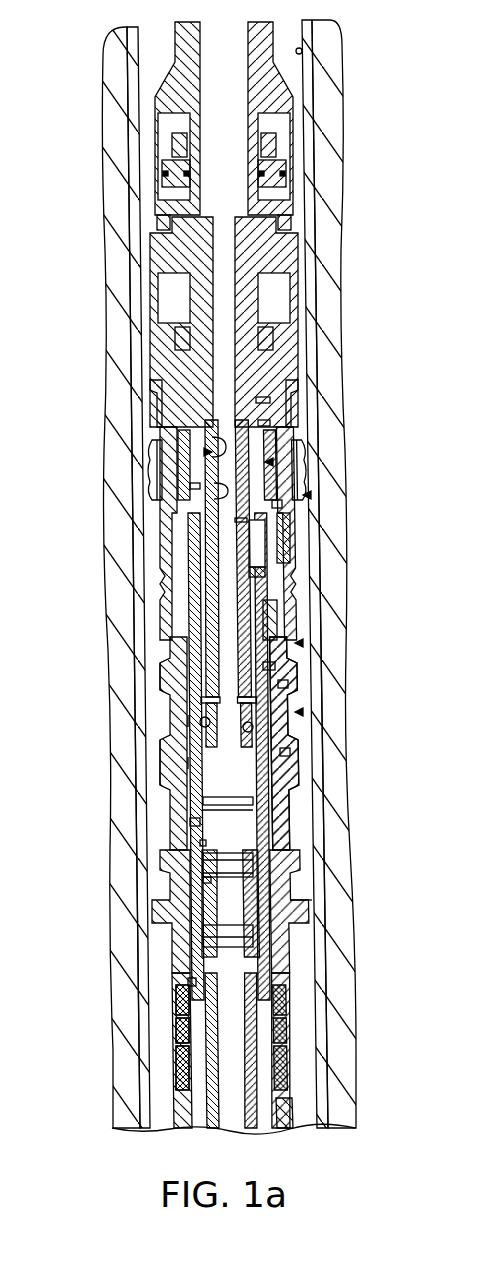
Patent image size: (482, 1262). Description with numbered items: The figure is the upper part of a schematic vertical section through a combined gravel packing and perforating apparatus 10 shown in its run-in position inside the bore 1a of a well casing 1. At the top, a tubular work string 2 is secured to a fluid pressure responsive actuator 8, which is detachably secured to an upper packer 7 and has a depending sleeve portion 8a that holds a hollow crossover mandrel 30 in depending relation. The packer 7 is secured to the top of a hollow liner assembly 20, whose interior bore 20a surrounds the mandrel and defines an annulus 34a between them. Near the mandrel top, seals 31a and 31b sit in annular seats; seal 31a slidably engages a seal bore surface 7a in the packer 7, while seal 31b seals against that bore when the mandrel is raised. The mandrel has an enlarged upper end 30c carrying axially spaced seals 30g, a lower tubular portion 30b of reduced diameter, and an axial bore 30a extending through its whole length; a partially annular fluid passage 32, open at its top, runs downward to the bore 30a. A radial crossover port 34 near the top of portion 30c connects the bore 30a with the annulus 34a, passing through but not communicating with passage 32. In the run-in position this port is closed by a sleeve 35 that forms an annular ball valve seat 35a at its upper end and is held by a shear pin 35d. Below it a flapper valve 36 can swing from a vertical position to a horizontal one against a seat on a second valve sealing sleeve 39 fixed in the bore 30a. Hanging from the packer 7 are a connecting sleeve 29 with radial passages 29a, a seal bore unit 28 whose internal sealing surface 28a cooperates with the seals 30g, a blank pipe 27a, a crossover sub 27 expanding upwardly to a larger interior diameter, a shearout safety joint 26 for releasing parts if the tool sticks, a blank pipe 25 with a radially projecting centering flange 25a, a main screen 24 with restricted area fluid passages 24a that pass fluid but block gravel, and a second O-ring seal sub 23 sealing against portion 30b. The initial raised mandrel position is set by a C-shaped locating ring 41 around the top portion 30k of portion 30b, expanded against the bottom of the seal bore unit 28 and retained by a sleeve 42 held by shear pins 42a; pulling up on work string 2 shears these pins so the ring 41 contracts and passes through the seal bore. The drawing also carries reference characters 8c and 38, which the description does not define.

The well casing 1 is at (318, 85).
The bore of the well casing 1a is at (304, 42).
The tubular work string 2 is at (262, 24).
The fluid pressure responsive actuator 8 is at (263, 296).
The depending sleeve portion of the actuator 8a is at (204, 452).
The body shoulder 8c is at (262, 381).
The second packer 7 is at (311, 495).
The seal bore surface 7a is at (263, 402).
The combined gravel packing and perforating apparatus 10 is at (303, 643).
The hollow liner assembly 20 is at (303, 712).
The interior bore of the liner assembly 20a is at (195, 822).
The second O-ring seal sub 23 is at (283, 1132).
The main screen 24 is at (290, 1040).
The restricted area fluid passages 24a is at (290, 1012).
The blank pipe 25 is at (277, 910).
The centering flange 25a is at (290, 903).
The shearout safety joint 26 is at (280, 815).
The crossover sub 27 is at (290, 752).
The blank pipe 27a is at (285, 684).
The seal bore unit 28 is at (270, 620).
The internal sealing surface 28a is at (270, 666).
The connecting sleeve 29 is at (287, 535).
The radial passages 29a is at (283, 567).
The hollow crossover mandrel 30 is at (273, 462).
The axial bore of the crossover mandrel 30a is at (190, 763).
The lower tubular portion of the mandrel 30b is at (258, 1090).
The enlarged upper end of the mandrel 30c is at (190, 721).
The seals 30g is at (185, 633).
The top portion of the reduced diameter mandrel portion 30k is at (190, 982).
The seal 31a is at (263, 424).
The seal 31b is at (277, 505).
The partially annular fluid passage 32 is at (217, 517).
The radial crossover port 34 is at (253, 552).
The annulus 34a is at (238, 523).
The ball valve seat sleeve 35 is at (173, 553).
The annular ball valve seat 35a is at (200, 487).
The shear pin 35d is at (263, 573).
The flapper valve 36 is at (200, 843).
The port 38 is at (253, 727).
The second valve sealing sleeve 39 is at (207, 880).
The locating ring 41 is at (208, 990).
The sleeve 42 is at (205, 1007).
The shear pins 42a is at (205, 1020).